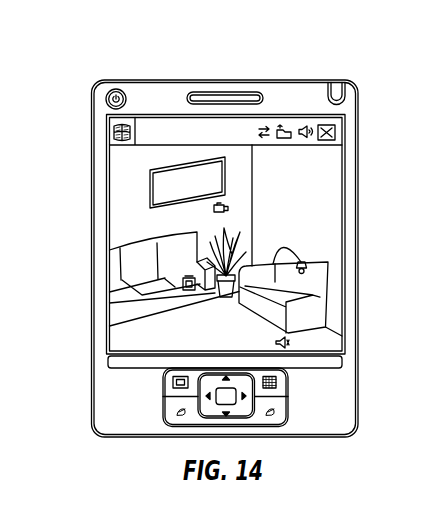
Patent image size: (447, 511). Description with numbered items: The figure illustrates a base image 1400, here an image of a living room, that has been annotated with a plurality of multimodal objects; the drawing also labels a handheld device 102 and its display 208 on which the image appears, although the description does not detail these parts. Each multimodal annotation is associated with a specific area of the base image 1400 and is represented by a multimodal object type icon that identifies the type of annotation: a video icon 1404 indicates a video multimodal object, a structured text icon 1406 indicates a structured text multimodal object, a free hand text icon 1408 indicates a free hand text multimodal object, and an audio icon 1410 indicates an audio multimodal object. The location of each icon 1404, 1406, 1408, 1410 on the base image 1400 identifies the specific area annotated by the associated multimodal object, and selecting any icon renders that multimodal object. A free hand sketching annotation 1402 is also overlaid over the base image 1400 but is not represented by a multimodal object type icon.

The mobile device 102 is at (172, 74).
The display 208 is at (191, 118).
The base image 1400 is at (288, 160).
The free hand sketching annotation 1402 is at (148, 190).
The video icon 1404 is at (213, 209).
The structured text icon 1406 is at (190, 292).
The free hand text icon 1408 is at (300, 261).
The audio icon 1410 is at (276, 341).